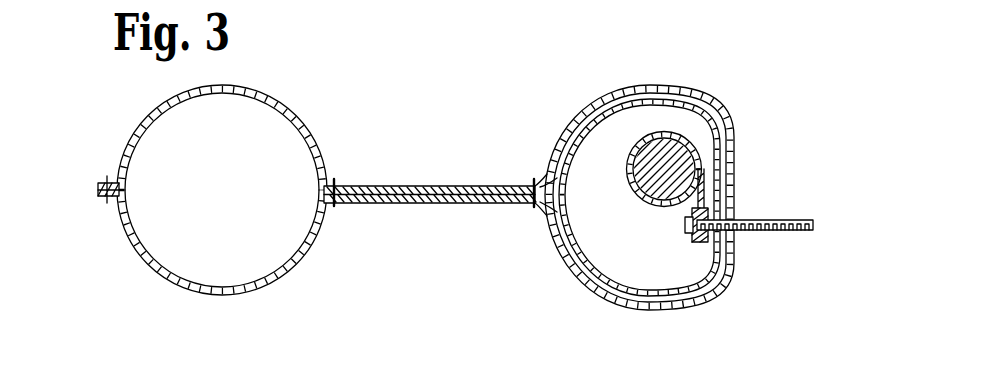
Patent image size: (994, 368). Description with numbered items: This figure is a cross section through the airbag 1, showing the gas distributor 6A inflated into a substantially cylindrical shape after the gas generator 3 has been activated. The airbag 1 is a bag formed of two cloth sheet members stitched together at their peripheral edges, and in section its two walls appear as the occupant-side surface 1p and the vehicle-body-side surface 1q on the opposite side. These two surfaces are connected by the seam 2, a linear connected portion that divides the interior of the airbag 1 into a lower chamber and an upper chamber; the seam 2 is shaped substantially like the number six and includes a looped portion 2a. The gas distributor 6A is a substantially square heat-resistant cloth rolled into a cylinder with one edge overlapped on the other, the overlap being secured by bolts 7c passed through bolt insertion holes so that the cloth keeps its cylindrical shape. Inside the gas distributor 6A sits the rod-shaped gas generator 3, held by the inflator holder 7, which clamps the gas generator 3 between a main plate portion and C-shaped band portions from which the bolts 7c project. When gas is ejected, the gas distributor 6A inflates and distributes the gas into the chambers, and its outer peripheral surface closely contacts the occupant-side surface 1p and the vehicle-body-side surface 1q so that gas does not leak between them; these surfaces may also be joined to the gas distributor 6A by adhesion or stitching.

The airbag 1 is at (221, 194).
The vehicle-body-side surface 1q is at (314, 112).
The occupant-side surface 1p is at (303, 278).
The seam 2 is at (437, 210).
The looped portion 2a is at (335, 184).
The gas generator 3 is at (648, 183).
The gas distributor 6A is at (578, 131).
The inflator holder 7 is at (627, 173).
The bolt 7c is at (780, 218).